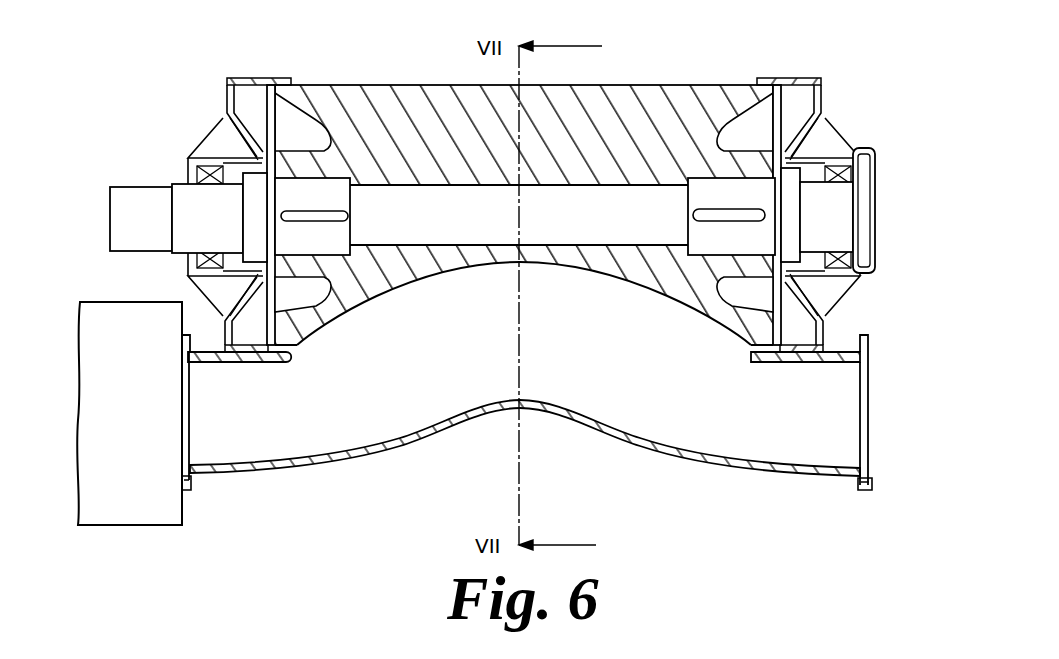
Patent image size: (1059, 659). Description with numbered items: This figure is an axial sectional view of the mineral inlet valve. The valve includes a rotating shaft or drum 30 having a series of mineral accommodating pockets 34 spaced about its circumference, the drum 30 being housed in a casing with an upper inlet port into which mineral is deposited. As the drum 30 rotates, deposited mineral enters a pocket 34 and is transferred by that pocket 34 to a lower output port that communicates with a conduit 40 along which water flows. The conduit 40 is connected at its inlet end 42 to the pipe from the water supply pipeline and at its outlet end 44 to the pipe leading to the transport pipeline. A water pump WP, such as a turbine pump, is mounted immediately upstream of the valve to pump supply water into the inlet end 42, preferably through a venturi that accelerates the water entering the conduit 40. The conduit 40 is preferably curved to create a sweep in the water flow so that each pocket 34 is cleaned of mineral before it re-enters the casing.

The rotating shaft or drum 30 is at (686, 73).
The mineral accommodating pocket 34 is at (681, 304).
The conduit 40 is at (476, 386).
The inlet end 42 is at (184, 482).
The outlet end 44 is at (860, 482).
The water pump WP is at (99, 300).